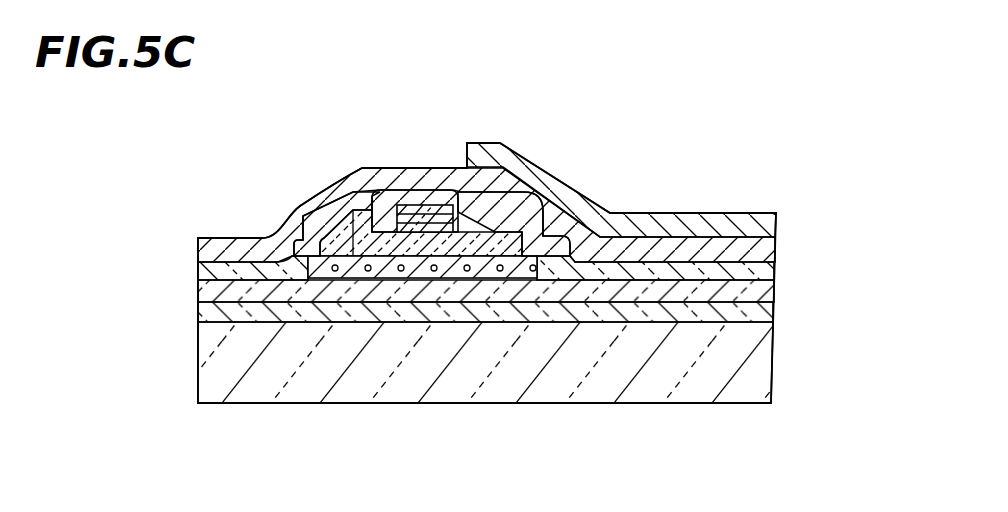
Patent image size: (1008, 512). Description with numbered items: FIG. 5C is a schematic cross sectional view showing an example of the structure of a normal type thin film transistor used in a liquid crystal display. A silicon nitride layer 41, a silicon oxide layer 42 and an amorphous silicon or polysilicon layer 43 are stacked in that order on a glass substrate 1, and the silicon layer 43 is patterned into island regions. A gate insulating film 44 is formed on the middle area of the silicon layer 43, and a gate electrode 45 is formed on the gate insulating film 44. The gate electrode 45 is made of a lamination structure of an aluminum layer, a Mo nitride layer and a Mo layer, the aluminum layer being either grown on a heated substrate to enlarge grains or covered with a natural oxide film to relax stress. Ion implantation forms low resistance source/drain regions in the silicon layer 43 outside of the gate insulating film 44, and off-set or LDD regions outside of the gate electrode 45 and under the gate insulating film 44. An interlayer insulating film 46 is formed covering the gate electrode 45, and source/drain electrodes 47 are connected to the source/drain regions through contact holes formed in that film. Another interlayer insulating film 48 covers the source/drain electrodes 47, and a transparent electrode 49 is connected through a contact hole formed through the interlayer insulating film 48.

The glass substrate 1 is at (772, 363).
The silicon nitride layer 41 is at (772, 313).
The silicon oxide layer 42 is at (772, 290).
The silicon layer 43 is at (407, 267).
The gate insulating film 44 is at (449, 240).
The gate electrode 45 is at (437, 210).
The interlayer insulating film 46 is at (400, 193).
The source/drain electrodes 47 is at (333, 202).
The interlayer insulating film 48 is at (772, 256).
The transparent electrode 49 is at (630, 213).